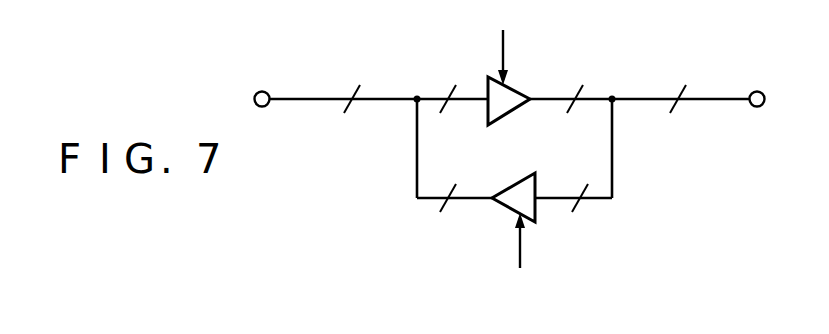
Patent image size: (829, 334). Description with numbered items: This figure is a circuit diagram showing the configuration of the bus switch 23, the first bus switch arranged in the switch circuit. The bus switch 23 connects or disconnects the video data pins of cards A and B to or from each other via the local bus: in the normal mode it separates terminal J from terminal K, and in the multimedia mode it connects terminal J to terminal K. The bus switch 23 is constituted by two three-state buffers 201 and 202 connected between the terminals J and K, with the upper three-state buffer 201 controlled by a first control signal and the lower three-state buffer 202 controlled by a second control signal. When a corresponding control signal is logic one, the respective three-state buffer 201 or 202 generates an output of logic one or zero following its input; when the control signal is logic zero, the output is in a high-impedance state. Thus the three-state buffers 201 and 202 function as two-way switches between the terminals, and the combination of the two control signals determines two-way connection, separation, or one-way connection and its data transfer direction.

The 3-state buffer 201 is at (515, 90).
The 3-state buffer 202 is at (510, 187).
The bus switch 23 is at (508, 161).